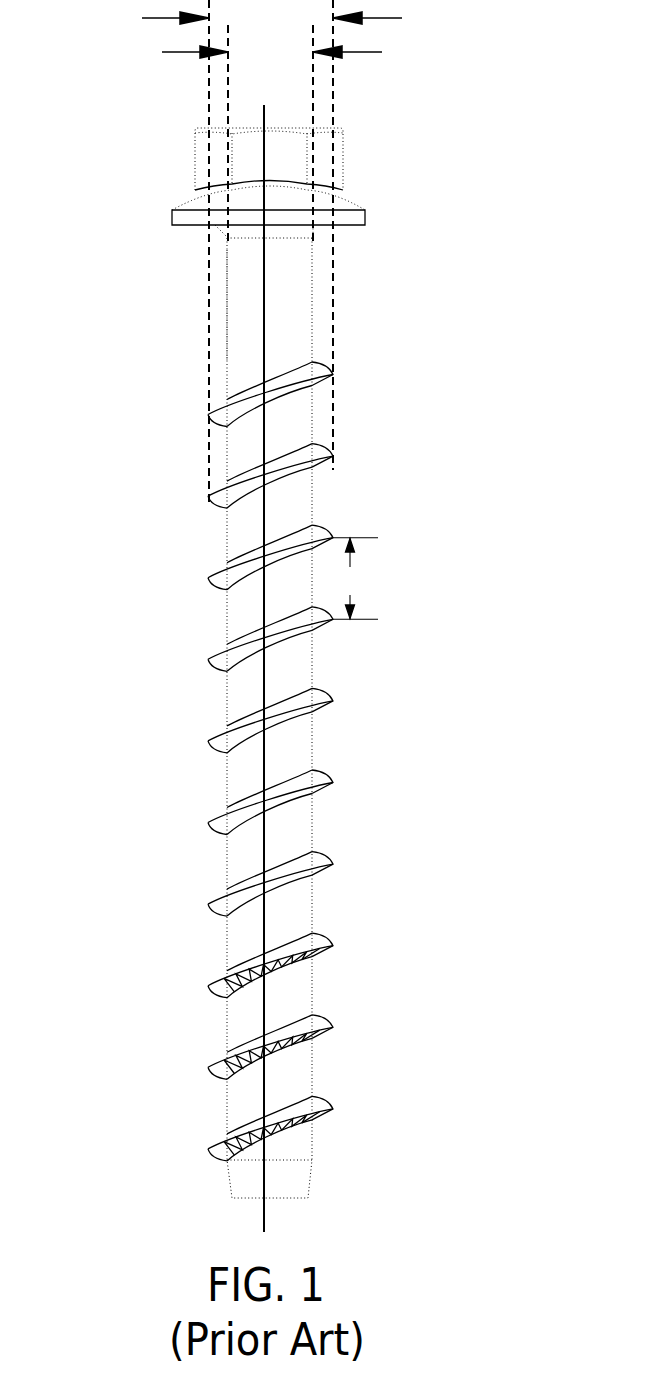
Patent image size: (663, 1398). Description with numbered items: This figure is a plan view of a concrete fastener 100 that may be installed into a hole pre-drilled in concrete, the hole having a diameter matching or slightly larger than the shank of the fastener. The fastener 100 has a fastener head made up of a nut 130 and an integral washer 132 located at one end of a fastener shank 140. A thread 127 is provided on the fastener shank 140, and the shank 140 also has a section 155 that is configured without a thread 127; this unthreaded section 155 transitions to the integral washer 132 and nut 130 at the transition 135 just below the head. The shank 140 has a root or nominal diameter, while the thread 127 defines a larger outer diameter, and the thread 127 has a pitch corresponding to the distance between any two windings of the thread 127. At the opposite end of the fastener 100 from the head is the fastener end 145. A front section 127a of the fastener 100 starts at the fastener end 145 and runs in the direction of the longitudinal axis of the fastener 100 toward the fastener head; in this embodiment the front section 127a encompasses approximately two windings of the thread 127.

The concrete fastener 100 is at (285, 619).
The nut 130 is at (333, 150).
The washer 132 is at (357, 215).
The transition 135 is at (334, 247).
The fastener shank 140 is at (313, 327).
The section 155 is at (237, 300).
The thread 127 is at (213, 821).
The front section 127a is at (212, 992).
The fastener end 145 is at (333, 1203).